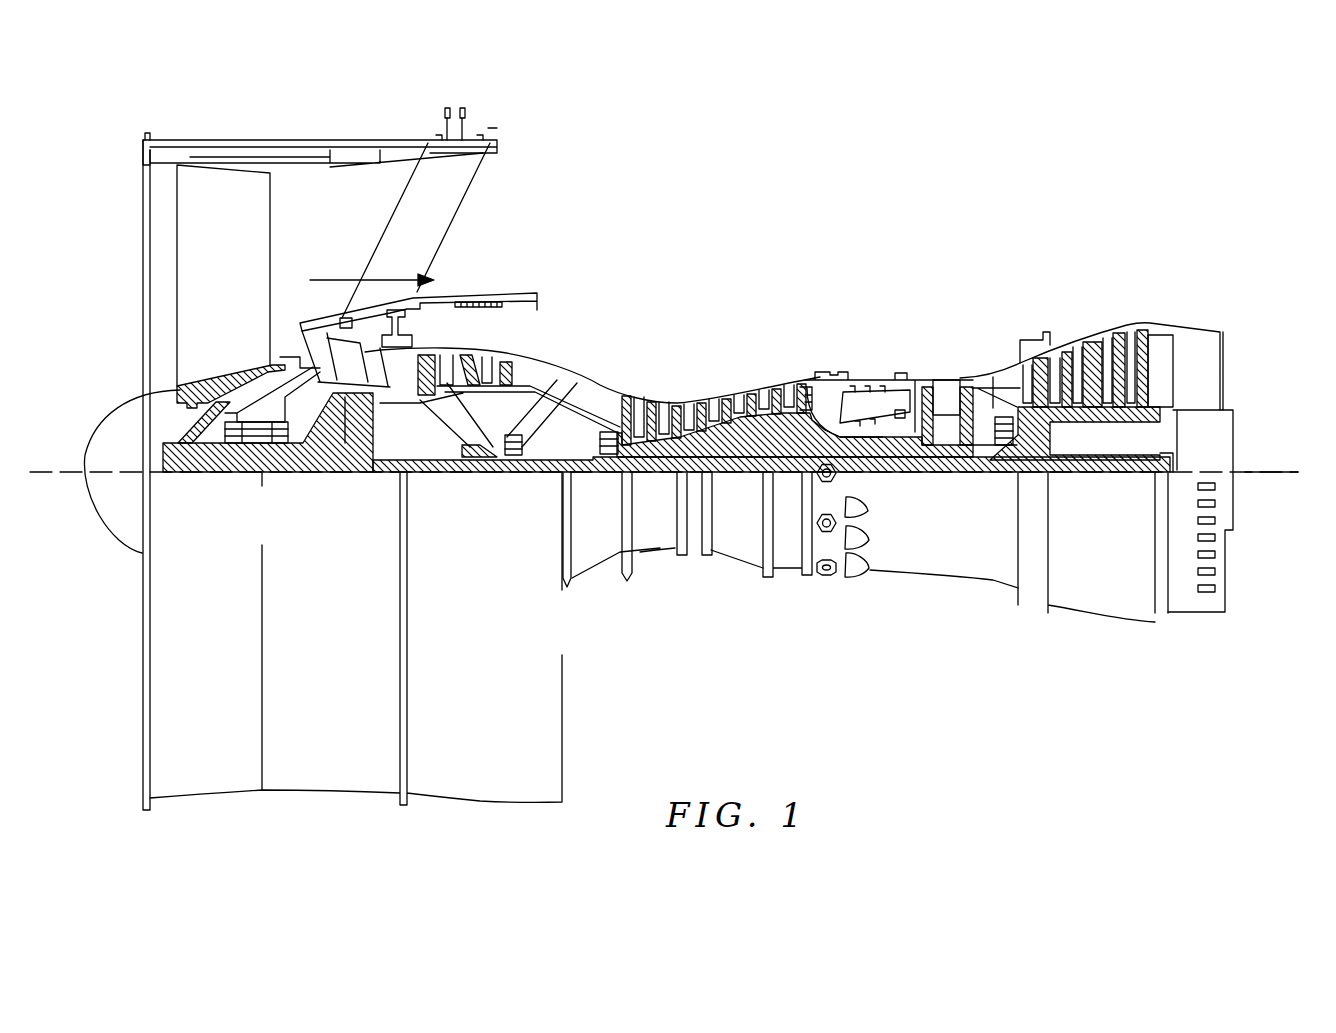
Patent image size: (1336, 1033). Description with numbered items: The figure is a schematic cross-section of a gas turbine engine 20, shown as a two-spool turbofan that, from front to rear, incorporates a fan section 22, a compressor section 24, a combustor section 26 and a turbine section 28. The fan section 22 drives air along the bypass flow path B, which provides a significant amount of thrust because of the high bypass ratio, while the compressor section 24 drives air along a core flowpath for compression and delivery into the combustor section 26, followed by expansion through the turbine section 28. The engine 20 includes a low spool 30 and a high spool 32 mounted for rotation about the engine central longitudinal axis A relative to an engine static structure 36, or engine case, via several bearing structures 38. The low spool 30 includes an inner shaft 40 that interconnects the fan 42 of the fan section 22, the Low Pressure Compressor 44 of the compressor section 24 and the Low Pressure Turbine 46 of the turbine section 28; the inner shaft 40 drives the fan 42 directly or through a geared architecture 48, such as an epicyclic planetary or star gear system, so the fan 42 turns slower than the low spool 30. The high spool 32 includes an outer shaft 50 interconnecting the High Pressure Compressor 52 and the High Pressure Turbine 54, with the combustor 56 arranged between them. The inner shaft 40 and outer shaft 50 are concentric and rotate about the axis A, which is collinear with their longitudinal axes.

The gas turbine engine 20 is at (907, 182).
The fan section 22 is at (135, 120).
The compressor section 24 is at (410, 258).
The combustor section 26 is at (930, 258).
The turbine section 28 is at (1160, 258).
The low spool 30 is at (746, 478).
The high spool 32 is at (787, 430).
The engine static structure 36 is at (791, 572).
The bearing structures 38 is at (297, 486).
The inner shaft 40 is at (590, 478).
The fan 42 is at (201, 284).
The Low Pressure Compressor 44 is at (490, 362).
The Low Pressure Turbine 46 is at (1090, 352).
The geared architecture 48 is at (356, 462).
The outer shaft 50 is at (866, 455).
The High Pressure Compressor 52 is at (723, 436).
The High Pressure Turbine 54 is at (945, 380).
The combustor 56 is at (868, 408).
The engine central longitudinal axis A is at (1283, 462).
The bypass flow path B is at (348, 280).